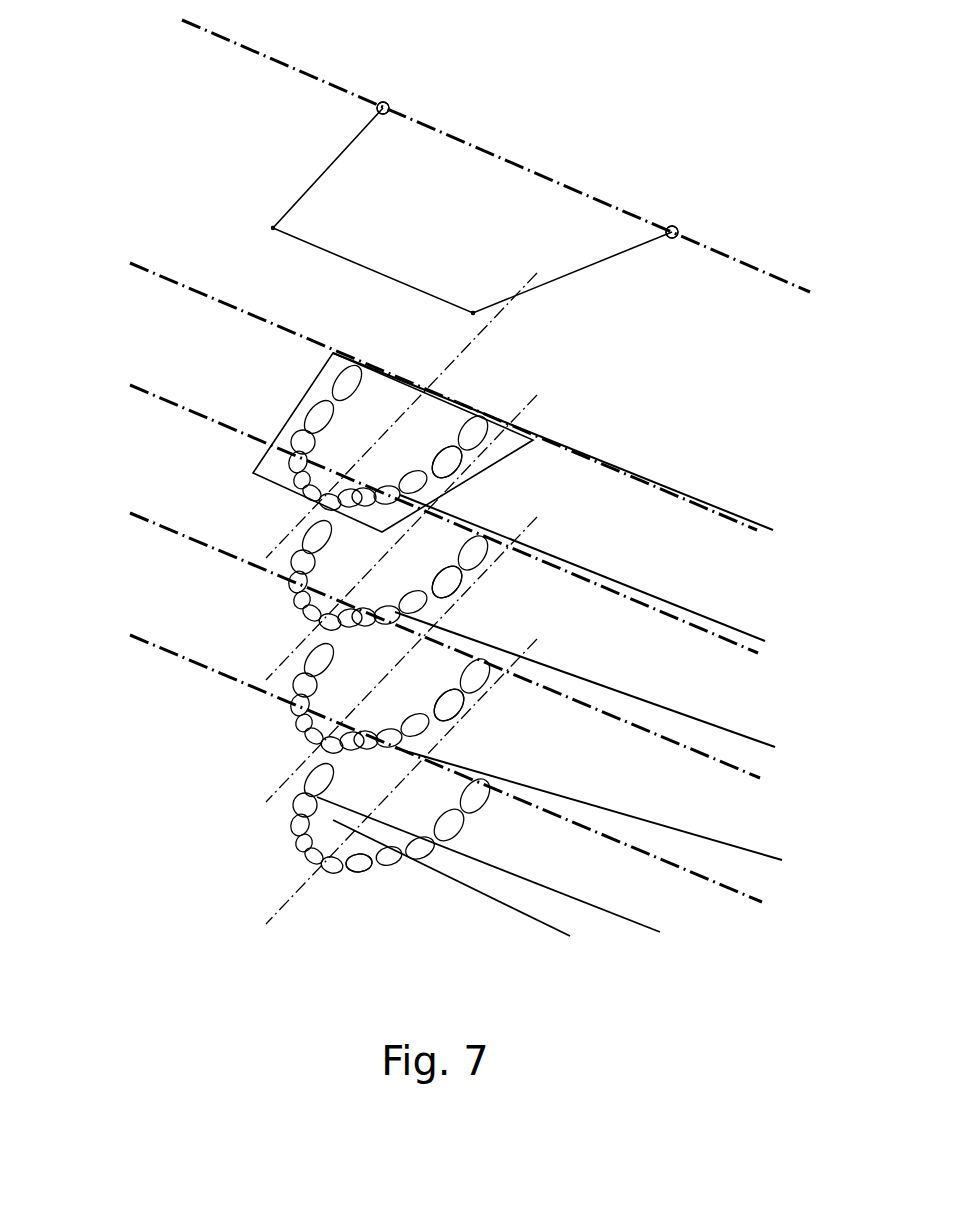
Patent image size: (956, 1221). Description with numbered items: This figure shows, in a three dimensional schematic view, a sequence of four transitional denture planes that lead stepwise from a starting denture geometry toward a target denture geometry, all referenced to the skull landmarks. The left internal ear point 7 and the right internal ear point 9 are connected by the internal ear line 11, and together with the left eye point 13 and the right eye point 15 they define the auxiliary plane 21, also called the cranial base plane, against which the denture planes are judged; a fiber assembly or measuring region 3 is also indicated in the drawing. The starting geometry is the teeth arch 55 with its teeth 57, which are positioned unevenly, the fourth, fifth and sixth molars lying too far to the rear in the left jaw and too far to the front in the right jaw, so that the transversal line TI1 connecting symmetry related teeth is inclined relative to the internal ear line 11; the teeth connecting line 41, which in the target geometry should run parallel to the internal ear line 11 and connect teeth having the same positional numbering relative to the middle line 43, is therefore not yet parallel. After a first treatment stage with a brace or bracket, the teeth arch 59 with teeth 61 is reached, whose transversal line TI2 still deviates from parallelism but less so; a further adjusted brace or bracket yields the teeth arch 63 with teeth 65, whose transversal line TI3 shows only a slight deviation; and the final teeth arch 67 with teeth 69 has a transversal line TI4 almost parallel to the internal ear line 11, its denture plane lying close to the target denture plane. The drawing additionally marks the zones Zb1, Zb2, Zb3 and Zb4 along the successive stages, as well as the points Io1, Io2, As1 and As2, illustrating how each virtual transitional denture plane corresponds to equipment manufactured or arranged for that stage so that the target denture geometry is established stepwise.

The fiber assembly / measuring region 3 is at (432, 425).
The left internal ear point 7 is at (388, 101).
The right internal ear point 9 is at (675, 243).
The internal ear line 11 is at (563, 187).
The left eye point 13 is at (471, 316).
The right eye point 15 is at (277, 236).
The auxiliary plane 21 is at (441, 178).
The teeth connecting line 41 is at (558, 932).
The middle line 43 is at (468, 345).
The teeth arch 55 is at (282, 859).
The teeth 57 is at (417, 860).
The teeth arch 59 is at (285, 727).
The teeth 61 is at (493, 660).
The teeth arch 63 is at (280, 602).
The teeth 65 is at (430, 600).
The teeth arch 67 is at (246, 462).
The teeth 69 is at (428, 483).
The transversal line TI1 is at (782, 858).
The transversal line TI2 is at (775, 745).
The transversal line TI3 is at (766, 639).
The transversal line TI4 is at (770, 527).
The zone Zb1 is at (392, 816).
The zone Zb2 is at (392, 696).
The zone Zb3 is at (390, 573).
The zone Zb4 is at (390, 436).
The point Io1 is at (366, 91).
The point Io2 is at (692, 220).
The point As1 is at (252, 218).
The point As2 is at (509, 325).